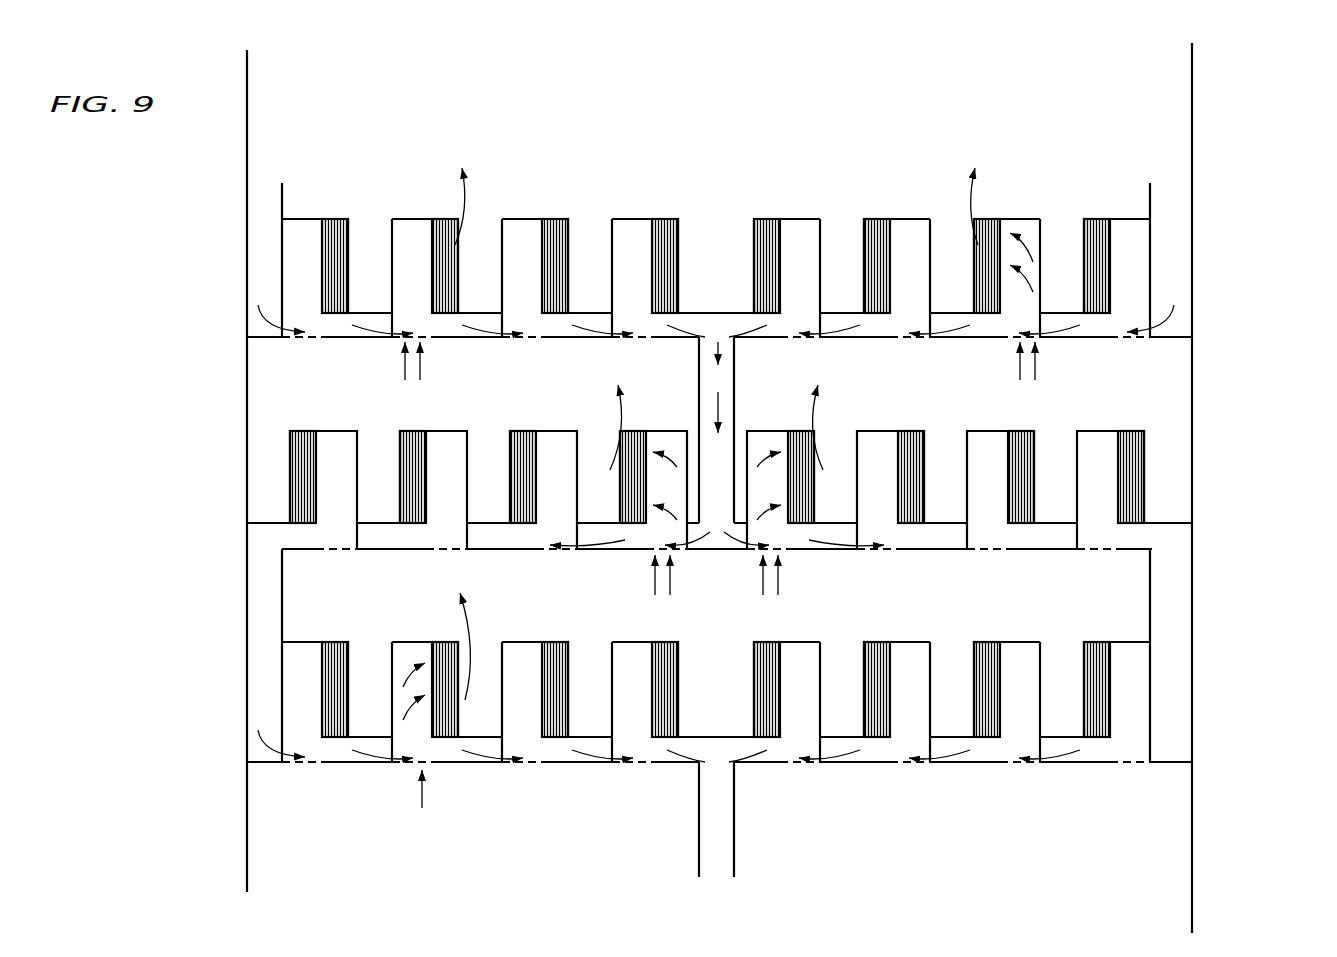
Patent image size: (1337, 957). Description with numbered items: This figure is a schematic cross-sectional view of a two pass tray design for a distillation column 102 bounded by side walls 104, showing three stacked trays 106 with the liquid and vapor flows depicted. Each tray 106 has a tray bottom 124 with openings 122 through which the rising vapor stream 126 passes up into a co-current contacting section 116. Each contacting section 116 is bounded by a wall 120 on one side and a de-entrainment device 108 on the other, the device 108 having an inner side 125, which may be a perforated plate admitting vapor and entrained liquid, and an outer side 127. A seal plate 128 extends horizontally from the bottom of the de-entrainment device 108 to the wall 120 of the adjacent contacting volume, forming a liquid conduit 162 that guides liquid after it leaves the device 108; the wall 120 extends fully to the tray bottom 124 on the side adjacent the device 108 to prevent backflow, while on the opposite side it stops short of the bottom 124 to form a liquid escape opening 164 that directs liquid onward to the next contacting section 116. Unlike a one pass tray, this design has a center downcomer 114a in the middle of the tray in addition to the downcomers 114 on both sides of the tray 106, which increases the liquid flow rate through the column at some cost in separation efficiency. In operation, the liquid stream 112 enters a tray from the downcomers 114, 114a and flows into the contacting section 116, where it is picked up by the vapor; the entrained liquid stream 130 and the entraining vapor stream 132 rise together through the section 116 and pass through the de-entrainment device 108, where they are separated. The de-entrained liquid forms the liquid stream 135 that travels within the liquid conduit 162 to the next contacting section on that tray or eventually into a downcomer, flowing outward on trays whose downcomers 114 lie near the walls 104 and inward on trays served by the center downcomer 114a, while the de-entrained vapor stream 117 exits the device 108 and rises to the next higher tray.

The distillation column 102 is at (1227, 167).
The side walls 104 is at (247, 170).
The trays 106 is at (275, 405).
The de-entrainment devices 108 is at (670, 222).
The liquid stream 112 is at (258, 305).
The liquid downcomers 114 is at (277, 236).
The center downcomer 114a is at (696, 380).
The co-current contacting sections 116 is at (646, 286).
The de-entrained vapor stream 117 is at (456, 186).
The wall 120 is at (612, 255).
The openings 122 is at (815, 338).
The tray bottom 124 is at (868, 338).
The inner side 125 is at (652, 222).
The rising vapor stream 126 is at (405, 375).
The outer side 127 is at (752, 232).
The seal plate 128 is at (1062, 733).
The entrained liquid stream 130 is at (1038, 268).
The entraining vapor stream 132 is at (1033, 240).
The liquid stream 135 is at (370, 338).
The liquid conduit 162 is at (703, 322).
The liquid escape opening 164 is at (577, 343).